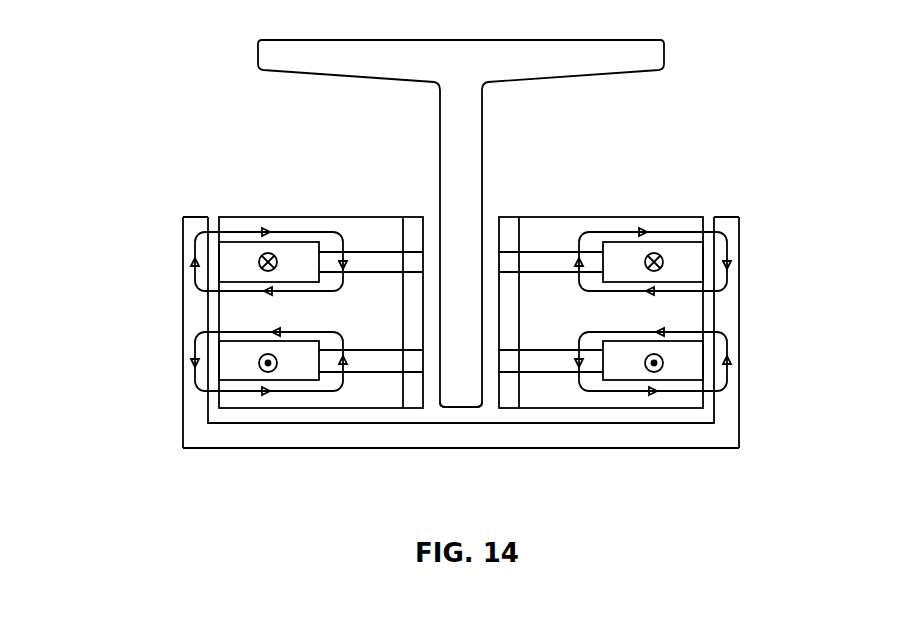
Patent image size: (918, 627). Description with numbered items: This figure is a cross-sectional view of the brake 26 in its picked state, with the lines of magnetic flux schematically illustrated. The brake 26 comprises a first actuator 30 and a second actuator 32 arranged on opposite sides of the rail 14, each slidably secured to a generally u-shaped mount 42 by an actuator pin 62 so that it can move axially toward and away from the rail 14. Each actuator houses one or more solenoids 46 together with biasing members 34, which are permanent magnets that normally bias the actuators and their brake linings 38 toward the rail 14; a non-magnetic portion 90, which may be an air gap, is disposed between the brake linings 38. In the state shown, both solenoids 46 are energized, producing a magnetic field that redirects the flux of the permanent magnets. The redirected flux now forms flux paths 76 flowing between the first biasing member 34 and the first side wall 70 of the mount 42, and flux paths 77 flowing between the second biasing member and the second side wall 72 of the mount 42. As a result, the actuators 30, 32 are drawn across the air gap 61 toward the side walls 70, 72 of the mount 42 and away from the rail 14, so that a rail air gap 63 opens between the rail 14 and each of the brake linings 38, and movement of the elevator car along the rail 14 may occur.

The rail 14 is at (600, 50).
The brake 26 is at (139, 81).
The first actuator 30 is at (240, 215).
The second actuator 32 is at (570, 216).
The biasing member 34 is at (333, 268).
The brake lining 38 is at (417, 243).
The mount 42 is at (205, 435).
The solenoid 46 is at (303, 250).
The air gap 61 is at (212, 230).
The actuator pin 62 is at (212, 312).
The rail air gap 63 is at (487, 378).
The first side wall 70 is at (183, 408).
The second side wall 72 is at (745, 280).
The flux path 76 is at (275, 230).
The flux path 77 is at (678, 298).
The non-magnetic portion 90 is at (408, 263).